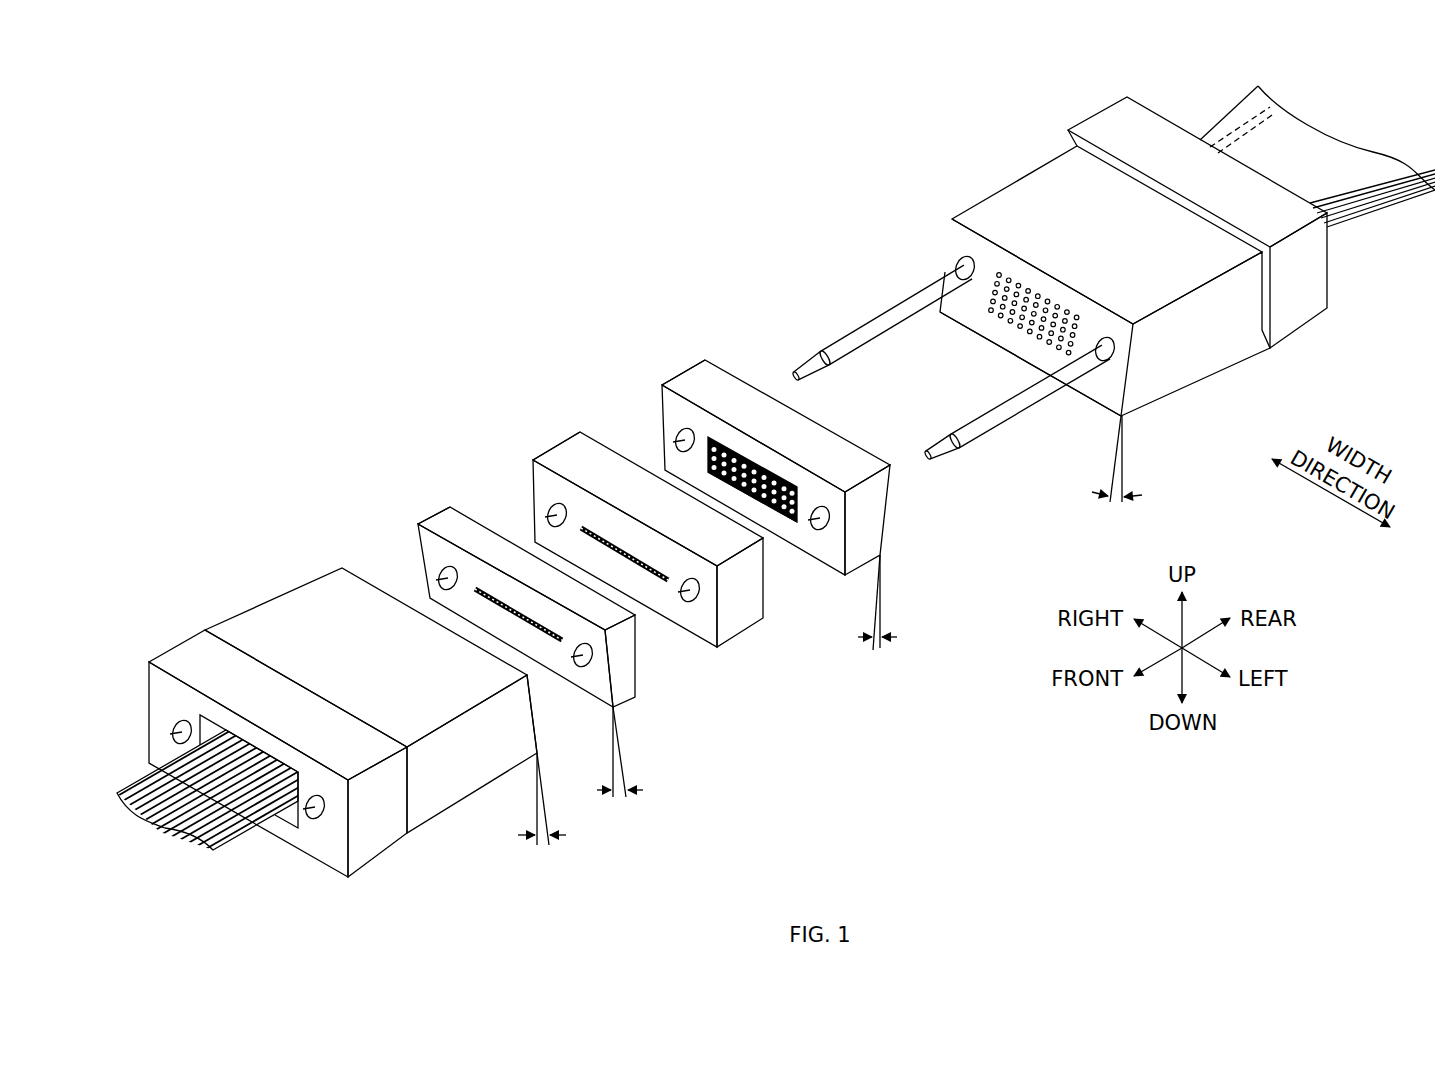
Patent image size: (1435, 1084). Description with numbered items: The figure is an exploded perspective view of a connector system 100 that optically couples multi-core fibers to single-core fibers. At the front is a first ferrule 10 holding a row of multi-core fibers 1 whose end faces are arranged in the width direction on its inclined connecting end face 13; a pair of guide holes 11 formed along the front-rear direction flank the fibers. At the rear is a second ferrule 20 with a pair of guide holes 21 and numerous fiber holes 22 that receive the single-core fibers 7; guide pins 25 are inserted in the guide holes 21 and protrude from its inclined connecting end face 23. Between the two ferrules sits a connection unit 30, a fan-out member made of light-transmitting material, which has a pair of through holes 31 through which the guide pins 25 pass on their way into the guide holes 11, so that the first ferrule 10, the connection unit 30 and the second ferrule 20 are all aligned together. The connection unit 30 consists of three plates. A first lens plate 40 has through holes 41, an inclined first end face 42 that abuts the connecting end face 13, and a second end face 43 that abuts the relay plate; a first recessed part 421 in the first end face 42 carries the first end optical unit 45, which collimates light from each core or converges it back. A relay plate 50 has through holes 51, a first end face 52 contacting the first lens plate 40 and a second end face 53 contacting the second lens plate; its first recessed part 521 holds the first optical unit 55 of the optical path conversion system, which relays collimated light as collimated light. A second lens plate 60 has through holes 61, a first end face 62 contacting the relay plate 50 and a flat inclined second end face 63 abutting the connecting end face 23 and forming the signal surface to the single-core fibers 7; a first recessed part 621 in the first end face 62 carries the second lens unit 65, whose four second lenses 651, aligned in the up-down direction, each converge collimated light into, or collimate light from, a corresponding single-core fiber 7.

The connector system 100 is at (455, 208).
The first ferrule 10 is at (235, 568).
The guide hole 11 is at (175, 732).
The connecting end face 13 is at (543, 722).
The multi-core fiber 1 is at (233, 827).
The connection unit 30 is at (632, 256).
The through hole 31 is at (650, 552).
The first lens plate 40 is at (420, 495).
The through hole 41 is at (437, 598).
The first end face 42 is at (430, 597).
The second end face 43 is at (462, 513).
The first end optical unit 45 is at (478, 588).
The first recessed part 421 is at (549, 652).
The relay plate 50 is at (538, 421).
The through hole 51 is at (543, 527).
The first end face 52 is at (548, 520).
The second end face 53 is at (588, 432).
The first optical unit 55 is at (583, 528).
The first recessed part 521 is at (658, 592).
The second lens plate 60 is at (670, 352).
The through hole 61 is at (660, 445).
The first end face 62 is at (677, 443).
The second end face 63 is at (683, 372).
The second lens unit 65 is at (716, 436).
The second lens 651 is at (782, 525).
The first recessed part 621 is at (752, 497).
The second ferrule 20 is at (975, 158).
The guide hole 21 is at (960, 265).
The fiber hole 22 is at (993, 278).
The connecting end face 23 is at (1018, 342).
The guide pin 25 is at (850, 330).
The single-core fiber 7 is at (1230, 115).